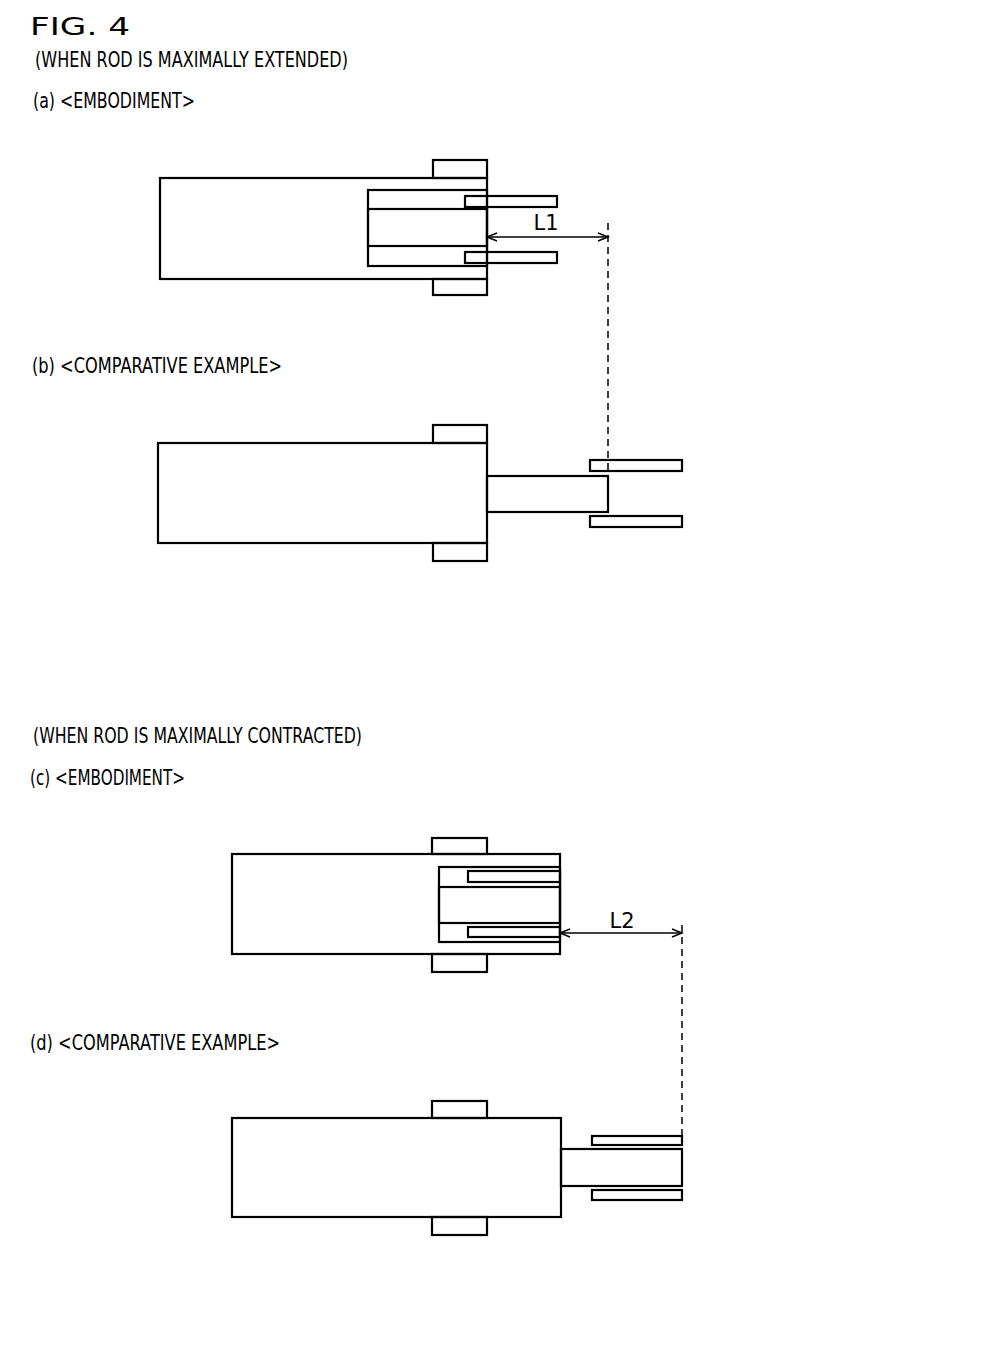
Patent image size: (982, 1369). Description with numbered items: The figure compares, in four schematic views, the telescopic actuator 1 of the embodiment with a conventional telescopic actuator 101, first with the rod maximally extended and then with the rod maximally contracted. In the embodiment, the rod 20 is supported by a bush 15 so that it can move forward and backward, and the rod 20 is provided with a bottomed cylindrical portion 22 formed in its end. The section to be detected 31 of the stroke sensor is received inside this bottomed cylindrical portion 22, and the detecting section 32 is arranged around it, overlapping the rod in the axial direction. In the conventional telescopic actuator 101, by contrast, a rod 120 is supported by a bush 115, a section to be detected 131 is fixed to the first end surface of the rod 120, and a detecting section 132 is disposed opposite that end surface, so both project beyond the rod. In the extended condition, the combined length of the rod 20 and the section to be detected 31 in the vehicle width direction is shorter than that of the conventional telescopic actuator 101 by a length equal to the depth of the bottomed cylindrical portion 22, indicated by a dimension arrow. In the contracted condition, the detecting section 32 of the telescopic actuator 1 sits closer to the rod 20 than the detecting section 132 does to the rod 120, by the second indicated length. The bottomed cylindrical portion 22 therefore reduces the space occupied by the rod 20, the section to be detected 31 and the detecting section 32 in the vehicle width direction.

The telescopic actuator 1 is at (210, 170).
The bush 15 is at (458, 167).
The rod 20 is at (260, 265).
The bottomed cylindrical portion 22 is at (402, 270).
The section to be detected 31 is at (396, 222).
The detecting section 32 is at (508, 200).
The conventional telescopic actuator 101 is at (210, 435).
The bush 115 is at (460, 551).
The rod 120 is at (257, 533).
The section to be detected 131 is at (547, 500).
The detecting section 132 is at (637, 520).